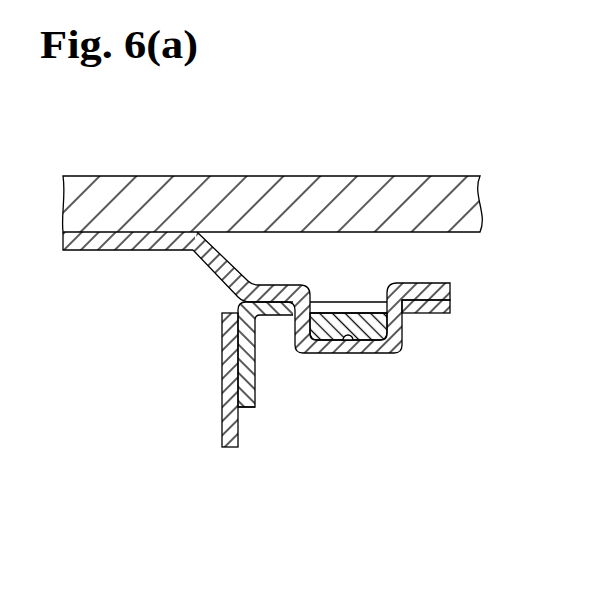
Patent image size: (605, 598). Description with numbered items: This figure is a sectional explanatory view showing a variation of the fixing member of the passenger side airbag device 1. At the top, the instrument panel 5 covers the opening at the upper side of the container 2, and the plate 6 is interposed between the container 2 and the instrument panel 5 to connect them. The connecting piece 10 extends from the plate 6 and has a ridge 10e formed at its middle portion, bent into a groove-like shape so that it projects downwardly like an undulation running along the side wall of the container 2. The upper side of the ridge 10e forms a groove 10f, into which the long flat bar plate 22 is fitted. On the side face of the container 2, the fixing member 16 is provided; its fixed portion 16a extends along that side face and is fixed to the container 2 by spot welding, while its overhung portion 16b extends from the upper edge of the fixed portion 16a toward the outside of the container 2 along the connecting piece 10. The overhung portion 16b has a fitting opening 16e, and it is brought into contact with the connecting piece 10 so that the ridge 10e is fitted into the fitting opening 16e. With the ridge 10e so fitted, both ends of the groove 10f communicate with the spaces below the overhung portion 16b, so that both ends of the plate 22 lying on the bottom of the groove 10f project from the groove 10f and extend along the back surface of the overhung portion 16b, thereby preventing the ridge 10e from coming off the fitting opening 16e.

The passenger side airbag device 1 is at (114, 356).
The container 2 is at (222, 410).
The instrument panel 5 is at (102, 180).
The plate 6 is at (104, 245).
The connecting piece 10 is at (286, 287).
The ridge 10e is at (386, 353).
The groove 10f is at (352, 340).
The fixing member 16 is at (262, 391).
The fixed portion 16a is at (248, 400).
The overhung portion 16b is at (452, 308).
The fitting opening 16e is at (357, 306).
The plate 22 is at (336, 320).